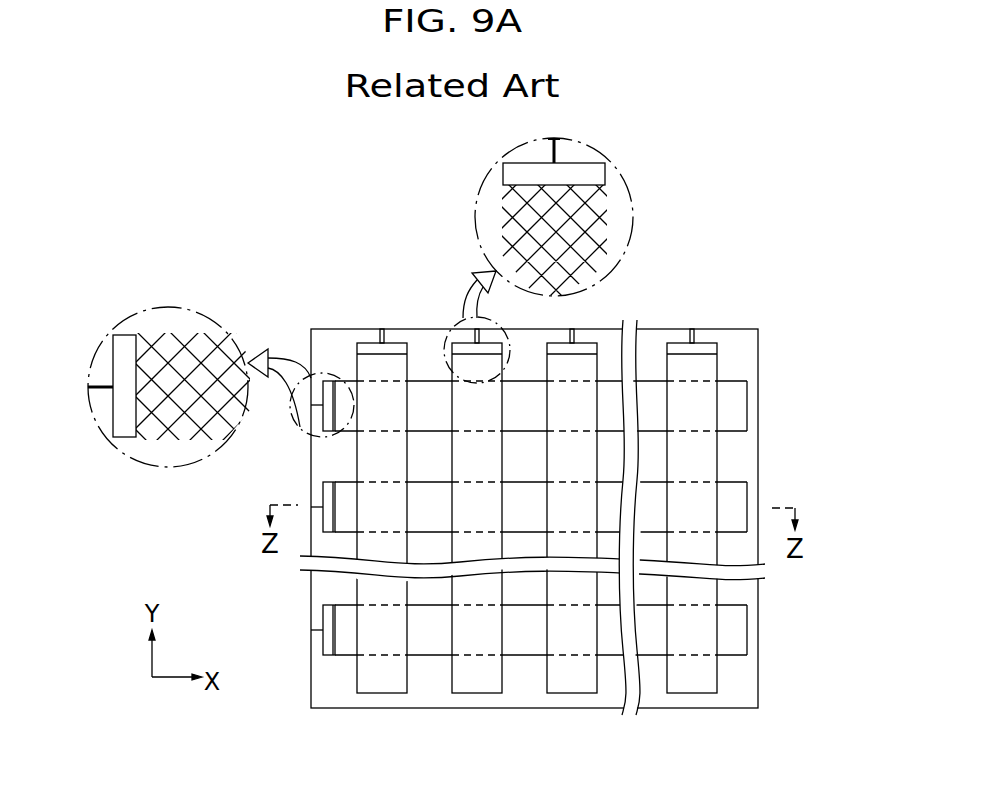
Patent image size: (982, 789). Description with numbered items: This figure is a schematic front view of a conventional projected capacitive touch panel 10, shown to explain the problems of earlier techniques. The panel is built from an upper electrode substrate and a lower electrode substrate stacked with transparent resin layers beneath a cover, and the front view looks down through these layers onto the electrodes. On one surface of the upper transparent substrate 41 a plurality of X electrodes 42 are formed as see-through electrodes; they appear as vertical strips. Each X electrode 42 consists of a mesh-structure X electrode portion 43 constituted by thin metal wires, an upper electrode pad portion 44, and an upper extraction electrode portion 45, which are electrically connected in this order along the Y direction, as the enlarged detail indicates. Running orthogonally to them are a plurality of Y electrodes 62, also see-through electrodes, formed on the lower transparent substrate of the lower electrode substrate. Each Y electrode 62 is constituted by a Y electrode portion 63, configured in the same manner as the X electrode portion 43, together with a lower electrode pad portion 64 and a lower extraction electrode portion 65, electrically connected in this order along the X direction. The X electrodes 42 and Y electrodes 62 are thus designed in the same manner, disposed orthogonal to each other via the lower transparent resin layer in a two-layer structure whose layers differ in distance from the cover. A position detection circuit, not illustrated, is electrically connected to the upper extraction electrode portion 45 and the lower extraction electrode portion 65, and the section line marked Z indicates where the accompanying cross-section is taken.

The projected capacitive touch panel 10 is at (437, 407).
The upper transparent substrate 41 is at (730, 692).
The X electrode 42 is at (373, 342).
The mesh-structure X electrode portion 43 is at (683, 130).
The upper electrode pad portion 44 is at (605, 181).
The upper extraction electrode portion 45 is at (557, 150).
The Y electrode 62 is at (747, 405).
The Y electrode portion 63 is at (192, 379).
The lower electrode pad portion 64 is at (130, 435).
The lower extraction electrode portion 65 is at (103, 390).